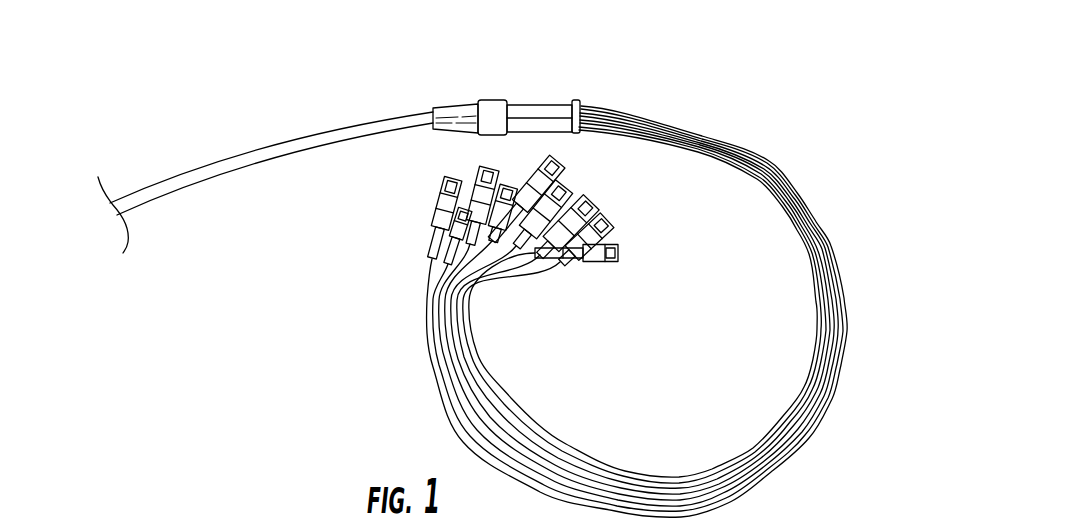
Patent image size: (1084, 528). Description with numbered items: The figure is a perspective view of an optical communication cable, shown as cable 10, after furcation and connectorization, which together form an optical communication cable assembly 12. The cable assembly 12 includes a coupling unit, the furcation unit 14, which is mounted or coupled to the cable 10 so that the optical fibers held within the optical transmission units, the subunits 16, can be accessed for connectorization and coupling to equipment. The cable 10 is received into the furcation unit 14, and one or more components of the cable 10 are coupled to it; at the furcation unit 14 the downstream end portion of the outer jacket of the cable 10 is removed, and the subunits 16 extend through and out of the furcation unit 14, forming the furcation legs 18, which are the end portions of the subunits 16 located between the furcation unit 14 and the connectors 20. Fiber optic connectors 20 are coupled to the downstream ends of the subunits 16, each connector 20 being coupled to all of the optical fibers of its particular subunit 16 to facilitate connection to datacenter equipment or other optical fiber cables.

The cable 10 is at (302, 144).
The cable assembly 12 is at (863, 141).
The furcation unit 14 is at (546, 111).
The subunits 16 is at (713, 161).
The furcation legs 18 is at (860, 371).
The fiber optic connectors 20 is at (578, 200).